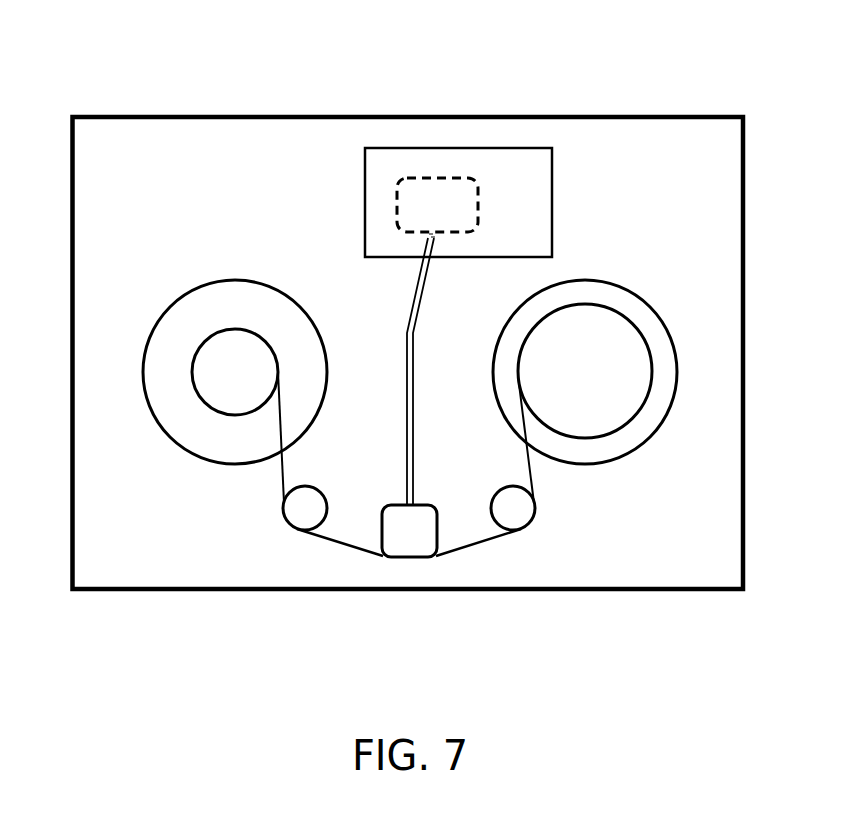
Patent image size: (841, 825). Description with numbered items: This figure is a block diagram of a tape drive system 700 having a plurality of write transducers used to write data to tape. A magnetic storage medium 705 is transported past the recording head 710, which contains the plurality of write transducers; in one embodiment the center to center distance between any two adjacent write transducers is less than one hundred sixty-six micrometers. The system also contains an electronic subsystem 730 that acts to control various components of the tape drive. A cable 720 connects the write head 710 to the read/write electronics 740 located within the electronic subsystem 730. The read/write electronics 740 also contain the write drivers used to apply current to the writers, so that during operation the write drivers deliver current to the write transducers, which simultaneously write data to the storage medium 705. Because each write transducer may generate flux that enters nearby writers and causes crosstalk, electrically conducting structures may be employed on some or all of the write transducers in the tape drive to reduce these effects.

The tape drive system 700 is at (675, 637).
The magnetic storage medium 705 is at (473, 547).
The recording head 710 is at (410, 558).
The cable 720 is at (398, 428).
The electronic subsystem 730 is at (365, 167).
The read/write electronics 740 is at (432, 178).